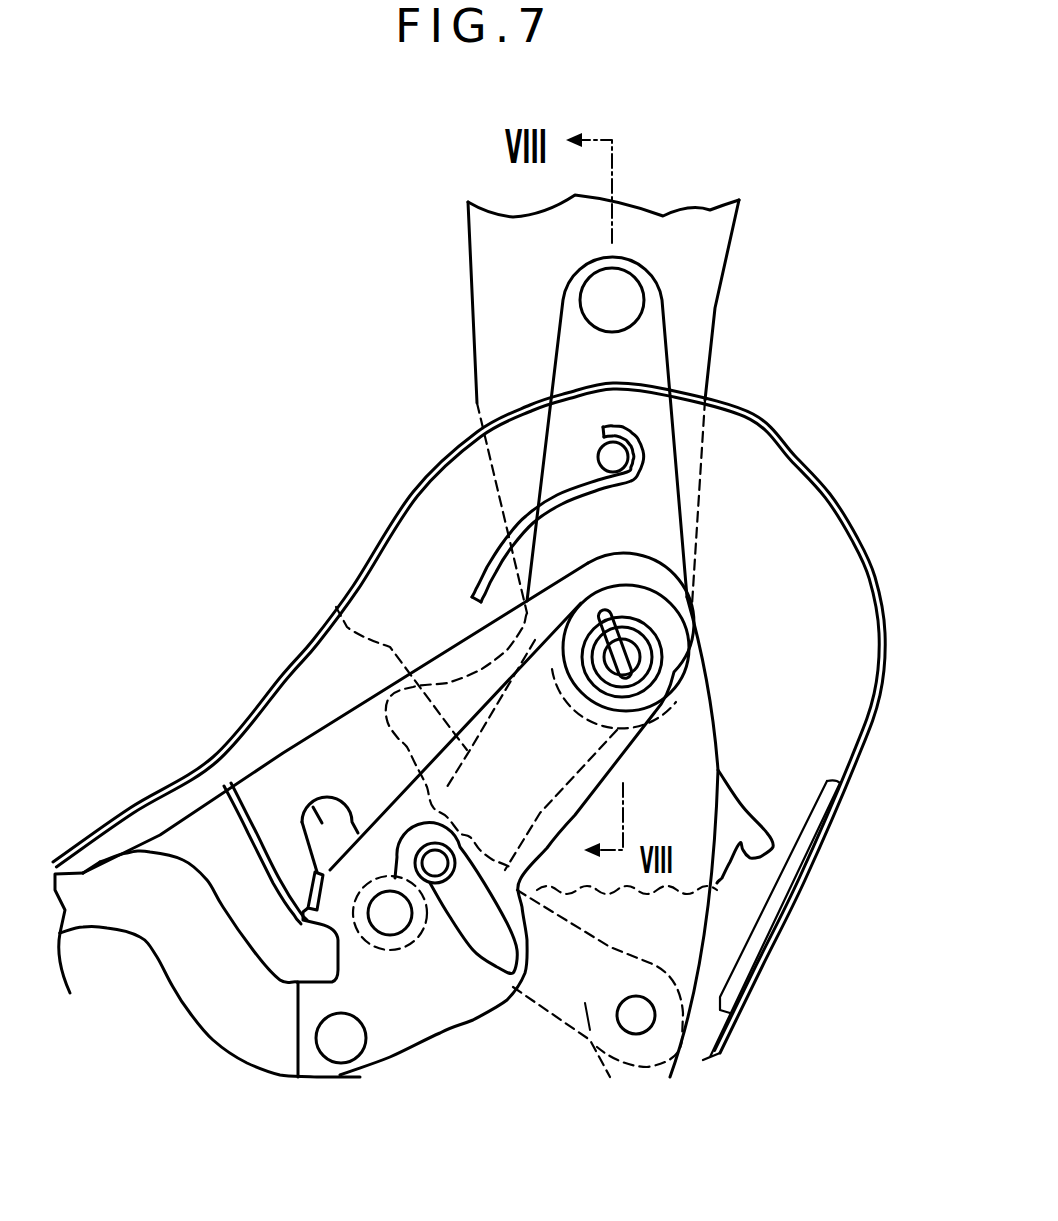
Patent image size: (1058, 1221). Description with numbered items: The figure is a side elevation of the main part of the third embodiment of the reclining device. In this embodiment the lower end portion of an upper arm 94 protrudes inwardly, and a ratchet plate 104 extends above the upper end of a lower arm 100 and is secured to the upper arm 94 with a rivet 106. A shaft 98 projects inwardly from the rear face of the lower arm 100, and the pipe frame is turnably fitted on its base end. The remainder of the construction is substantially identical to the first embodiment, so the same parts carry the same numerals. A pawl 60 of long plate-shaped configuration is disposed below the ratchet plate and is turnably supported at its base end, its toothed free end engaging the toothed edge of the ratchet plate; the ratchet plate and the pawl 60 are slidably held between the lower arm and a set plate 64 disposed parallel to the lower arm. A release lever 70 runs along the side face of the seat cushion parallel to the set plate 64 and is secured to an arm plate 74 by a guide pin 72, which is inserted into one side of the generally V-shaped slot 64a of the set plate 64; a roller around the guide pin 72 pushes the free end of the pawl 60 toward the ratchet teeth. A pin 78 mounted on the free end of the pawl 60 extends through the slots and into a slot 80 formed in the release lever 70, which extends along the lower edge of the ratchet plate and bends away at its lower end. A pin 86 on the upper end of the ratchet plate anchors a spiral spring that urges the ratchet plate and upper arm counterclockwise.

The pawl 60 is at (608, 1077).
The set plate 64 is at (683, 938).
The slot 64a is at (303, 802).
The release lever 70 is at (317, 1068).
The guide pin 72 is at (387, 927).
The arm plate 74 is at (336, 610).
The pin 78 is at (437, 870).
The slot 80 is at (492, 940).
The pin 86 is at (598, 447).
The upper arm 94 is at (480, 275).
The shaft 98 is at (645, 647).
The lower arm 100 is at (753, 418).
The ratchet plate 104 is at (740, 843).
The rivet 106 is at (603, 297).